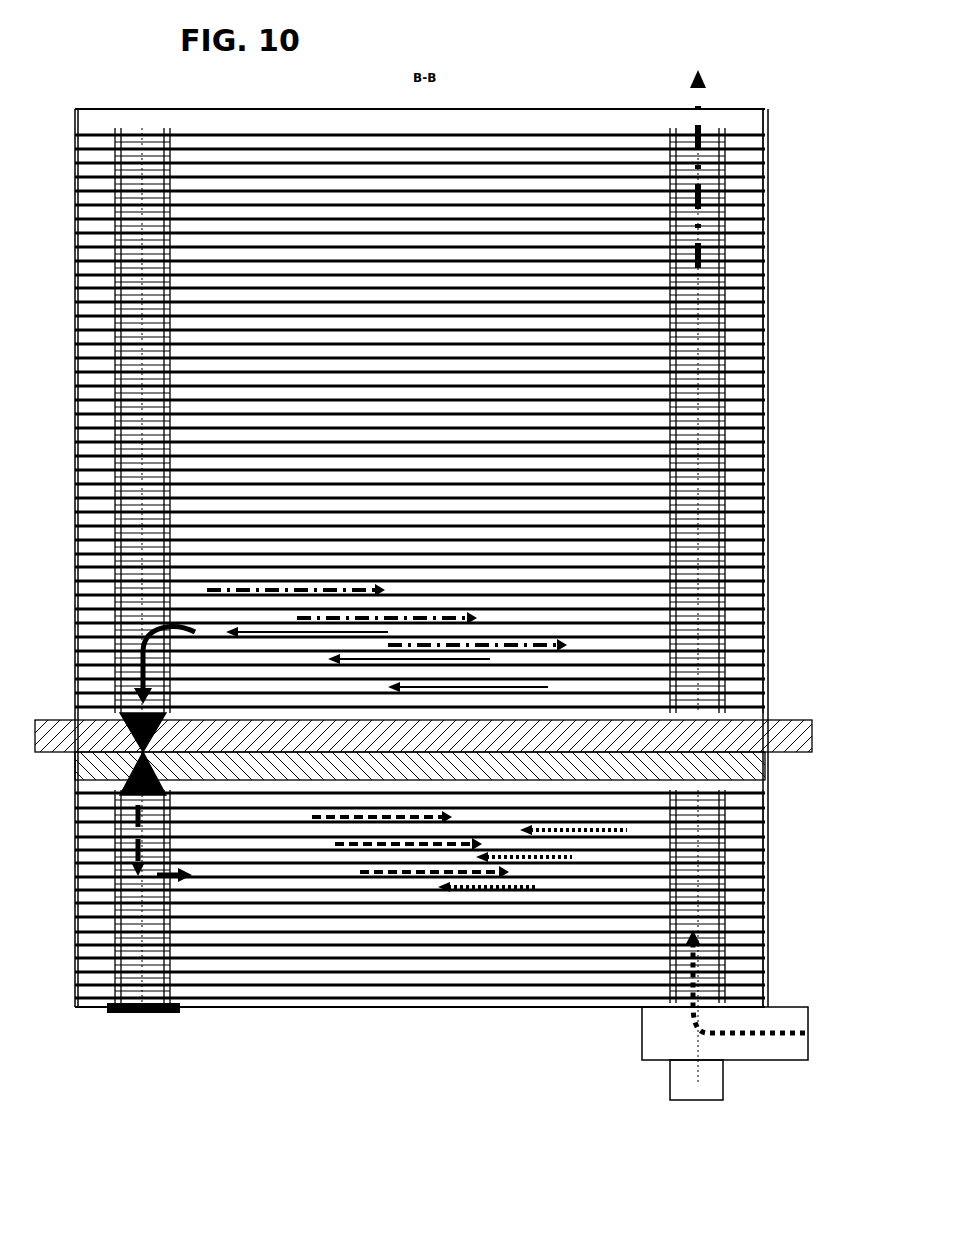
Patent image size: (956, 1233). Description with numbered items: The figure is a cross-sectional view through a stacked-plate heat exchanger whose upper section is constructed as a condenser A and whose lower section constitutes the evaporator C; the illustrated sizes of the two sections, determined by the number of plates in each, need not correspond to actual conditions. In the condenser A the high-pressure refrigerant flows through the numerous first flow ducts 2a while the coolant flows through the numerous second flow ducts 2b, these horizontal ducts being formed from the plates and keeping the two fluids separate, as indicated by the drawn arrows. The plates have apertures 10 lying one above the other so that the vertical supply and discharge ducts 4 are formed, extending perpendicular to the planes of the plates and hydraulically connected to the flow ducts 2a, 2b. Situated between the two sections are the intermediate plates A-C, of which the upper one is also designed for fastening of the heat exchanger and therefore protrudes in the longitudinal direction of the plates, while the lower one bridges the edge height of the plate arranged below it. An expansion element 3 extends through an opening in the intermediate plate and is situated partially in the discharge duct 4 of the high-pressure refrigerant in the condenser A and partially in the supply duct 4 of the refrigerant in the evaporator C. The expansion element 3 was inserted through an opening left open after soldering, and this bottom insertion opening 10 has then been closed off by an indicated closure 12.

The first flow ducts 2a is at (645, 605).
The second flow ducts 2b is at (646, 612).
The expansion element 3 is at (152, 738).
The supply and discharge ducts 4 is at (703, 925).
The apertures 10 is at (706, 135).
The closure 12 is at (178, 1013).
The condenser A is at (802, 434).
The evaporator C is at (788, 897).
The intermediate plates A-C is at (746, 745).